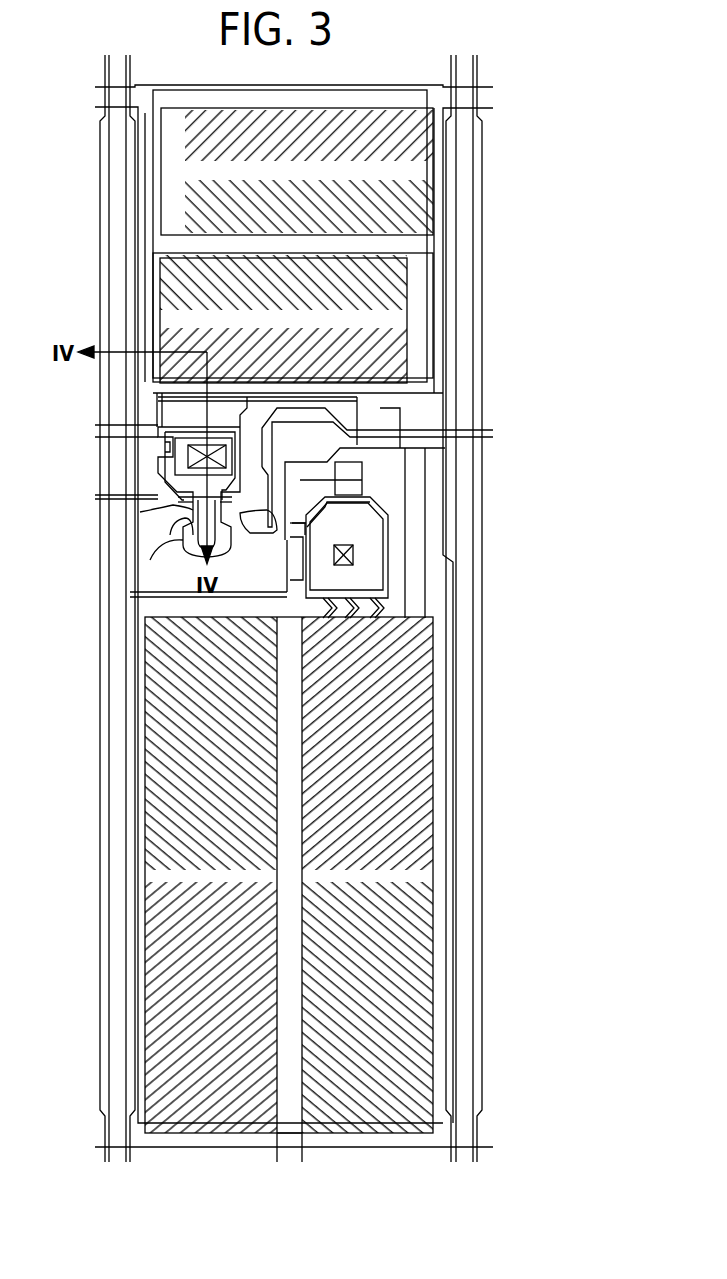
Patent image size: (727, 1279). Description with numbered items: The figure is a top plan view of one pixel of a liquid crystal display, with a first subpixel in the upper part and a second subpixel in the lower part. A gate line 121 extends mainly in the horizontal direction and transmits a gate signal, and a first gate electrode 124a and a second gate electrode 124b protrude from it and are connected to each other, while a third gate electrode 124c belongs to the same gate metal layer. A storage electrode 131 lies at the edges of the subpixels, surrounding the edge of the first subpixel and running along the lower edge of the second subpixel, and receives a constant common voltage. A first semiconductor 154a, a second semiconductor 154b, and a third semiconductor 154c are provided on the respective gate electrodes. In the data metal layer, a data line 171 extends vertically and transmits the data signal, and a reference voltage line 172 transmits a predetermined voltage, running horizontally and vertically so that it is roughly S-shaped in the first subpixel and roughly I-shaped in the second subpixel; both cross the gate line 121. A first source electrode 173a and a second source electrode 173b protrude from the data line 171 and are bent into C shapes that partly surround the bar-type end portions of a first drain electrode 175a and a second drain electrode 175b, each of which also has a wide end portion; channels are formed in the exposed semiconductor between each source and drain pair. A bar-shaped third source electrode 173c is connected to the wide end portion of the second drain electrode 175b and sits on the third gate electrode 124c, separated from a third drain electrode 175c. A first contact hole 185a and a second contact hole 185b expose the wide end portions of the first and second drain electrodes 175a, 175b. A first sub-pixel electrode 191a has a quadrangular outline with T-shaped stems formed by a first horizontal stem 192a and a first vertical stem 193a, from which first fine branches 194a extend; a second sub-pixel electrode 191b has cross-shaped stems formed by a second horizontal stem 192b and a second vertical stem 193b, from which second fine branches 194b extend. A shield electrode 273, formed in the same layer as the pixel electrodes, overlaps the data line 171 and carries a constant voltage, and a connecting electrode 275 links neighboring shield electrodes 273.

The gate line 121 is at (455, 443).
The first gate electrode 124a is at (178, 552).
The second gate electrode 124b is at (268, 600).
The third gate electrode 124c is at (400, 415).
The storage electrode 131 is at (152, 86).
The first semiconductor 154a is at (205, 565).
The second semiconductor 154b is at (352, 530).
The third semiconductor 154c is at (348, 462).
The data line 171 is at (484, 690).
The reference voltage line 172 is at (410, 86).
The first source electrode 173a is at (158, 540).
The second source electrode 173b is at (260, 505).
The third source electrode 173c is at (362, 478).
The first drain electrode 175a is at (170, 520).
The second drain electrode 175b is at (250, 597).
The third drain electrode 175c is at (340, 500).
The first contact hole 185a is at (188, 458).
The second contact hole 185b is at (356, 556).
The first sub-pixel electrode 191a is at (383, 245).
The second sub-pixel electrode 191b is at (382, 889).
The first horizontal stem 192a is at (380, 322).
The second horizontal stem 192b is at (400, 878).
The first vertical stem 193a is at (425, 297).
The second vertical stem 193b is at (290, 1020).
The first fine branches 194a is at (345, 268).
The second fine branches 194b is at (385, 940).
The shield electrode 273 is at (445, 428).
The connecting electrode 275 is at (360, 420).